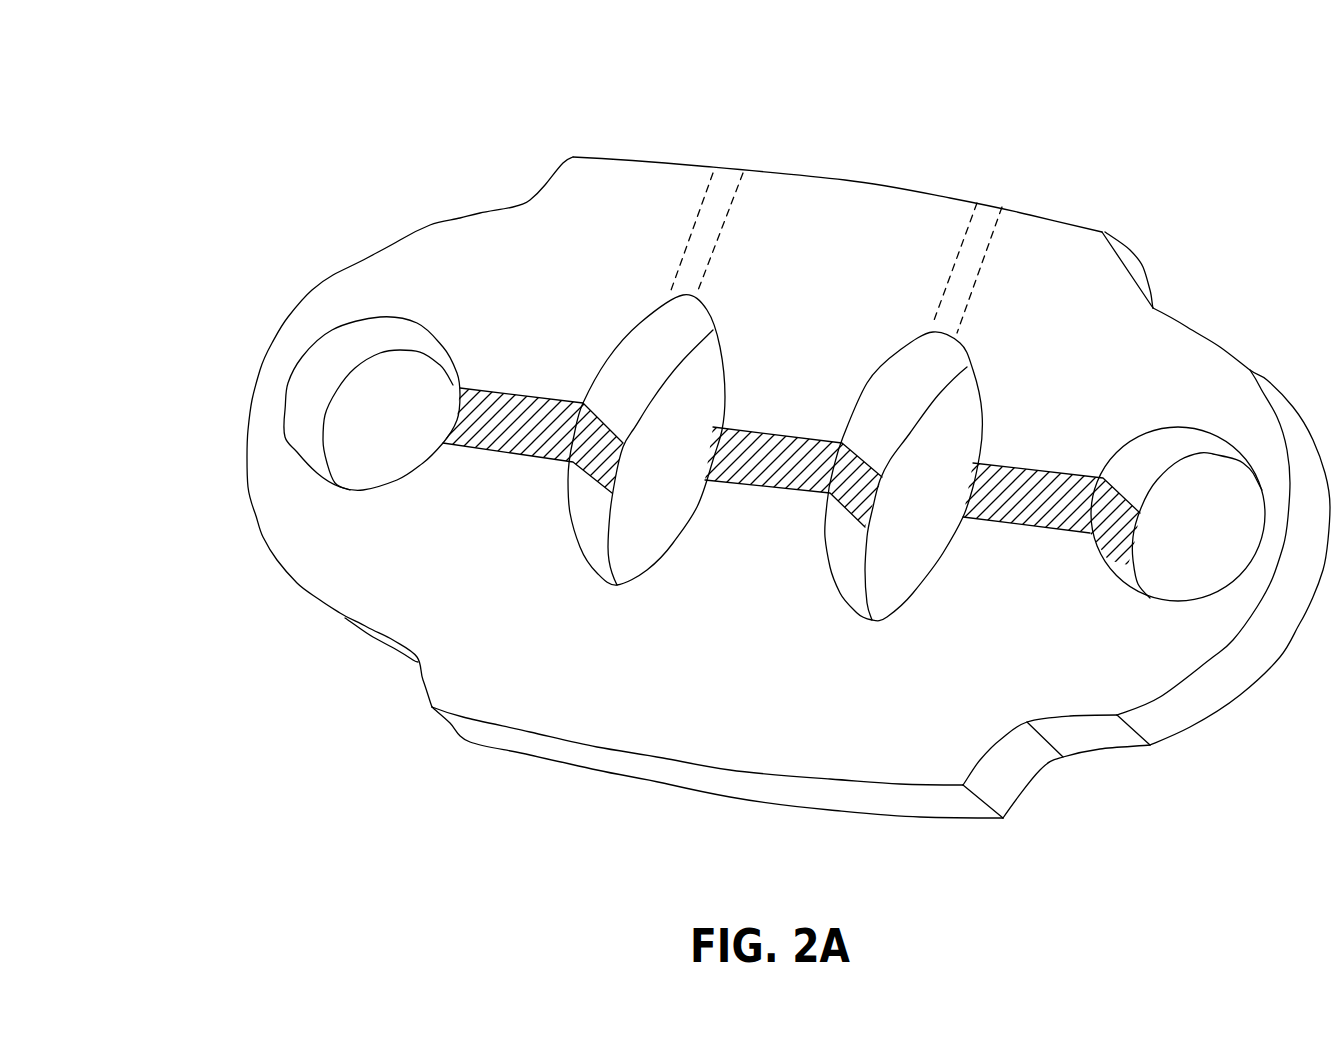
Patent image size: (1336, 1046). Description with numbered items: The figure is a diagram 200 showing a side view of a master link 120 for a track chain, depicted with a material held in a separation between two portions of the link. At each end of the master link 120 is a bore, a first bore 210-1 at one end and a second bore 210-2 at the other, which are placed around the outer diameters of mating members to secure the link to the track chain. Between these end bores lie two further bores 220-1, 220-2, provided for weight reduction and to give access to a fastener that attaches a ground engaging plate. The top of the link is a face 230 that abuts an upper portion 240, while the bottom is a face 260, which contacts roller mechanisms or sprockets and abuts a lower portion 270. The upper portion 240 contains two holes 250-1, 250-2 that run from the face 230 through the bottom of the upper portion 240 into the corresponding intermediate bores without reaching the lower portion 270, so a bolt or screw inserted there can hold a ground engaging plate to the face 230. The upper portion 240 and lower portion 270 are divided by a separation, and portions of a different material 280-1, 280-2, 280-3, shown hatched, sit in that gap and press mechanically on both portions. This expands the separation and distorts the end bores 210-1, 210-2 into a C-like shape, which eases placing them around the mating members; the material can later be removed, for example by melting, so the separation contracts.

The diagram 200 is at (256, 64).
The master link 120 is at (293, 196).
The face 230 is at (843, 178).
The portion 240 is at (835, 292).
The hole 250-1 is at (680, 268).
The hole 250-2 is at (967, 310).
The face 260 is at (788, 787).
The portion 270 is at (741, 674).
The bore 210-1 is at (410, 434).
The bore 210-2 is at (1230, 544).
The bore 220-1 is at (696, 474).
The bore 220-2 is at (953, 502).
The material 280-1 is at (500, 387).
The material 280-2 is at (783, 433).
The material 280-3 is at (1053, 470).